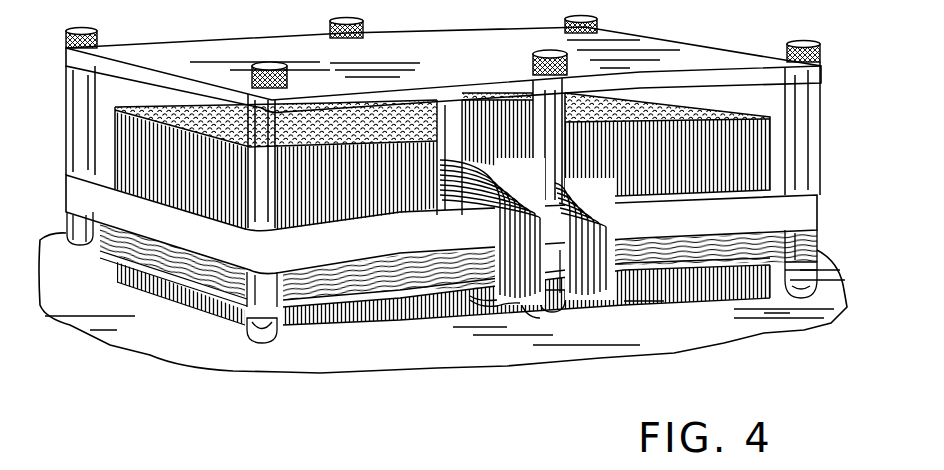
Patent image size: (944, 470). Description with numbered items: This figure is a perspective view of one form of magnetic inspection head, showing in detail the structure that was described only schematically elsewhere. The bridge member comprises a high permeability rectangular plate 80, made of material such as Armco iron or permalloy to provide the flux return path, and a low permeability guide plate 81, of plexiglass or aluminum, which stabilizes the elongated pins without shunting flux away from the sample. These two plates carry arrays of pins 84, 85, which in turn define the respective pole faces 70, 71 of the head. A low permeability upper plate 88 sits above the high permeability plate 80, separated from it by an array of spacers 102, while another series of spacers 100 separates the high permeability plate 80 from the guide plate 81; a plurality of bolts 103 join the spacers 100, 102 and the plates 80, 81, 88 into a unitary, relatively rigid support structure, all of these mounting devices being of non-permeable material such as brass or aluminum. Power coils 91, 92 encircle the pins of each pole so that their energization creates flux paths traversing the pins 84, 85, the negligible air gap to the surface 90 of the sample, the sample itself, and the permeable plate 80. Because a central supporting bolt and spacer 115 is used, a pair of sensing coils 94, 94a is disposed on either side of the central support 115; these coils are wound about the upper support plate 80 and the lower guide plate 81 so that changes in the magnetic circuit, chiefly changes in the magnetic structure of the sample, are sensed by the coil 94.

The pole face 70 is at (316, 345).
The pole face 71 is at (716, 322).
The high permeability plate 80 is at (63, 178).
The guide plate 81 is at (52, 245).
The pins 84 is at (108, 138).
The pins 85 is at (780, 157).
The upper plate 88 is at (688, 50).
The surface of the sample 90 is at (452, 352).
The power coil 91 is at (150, 353).
The power coil 92 is at (786, 262).
The sensing coil 94 is at (518, 300).
The sensing coil 94a is at (612, 300).
The spacers 100 is at (233, 303).
The spacers 102 is at (812, 138).
The bolts 103 is at (820, 44).
The central support 115 is at (330, 28).